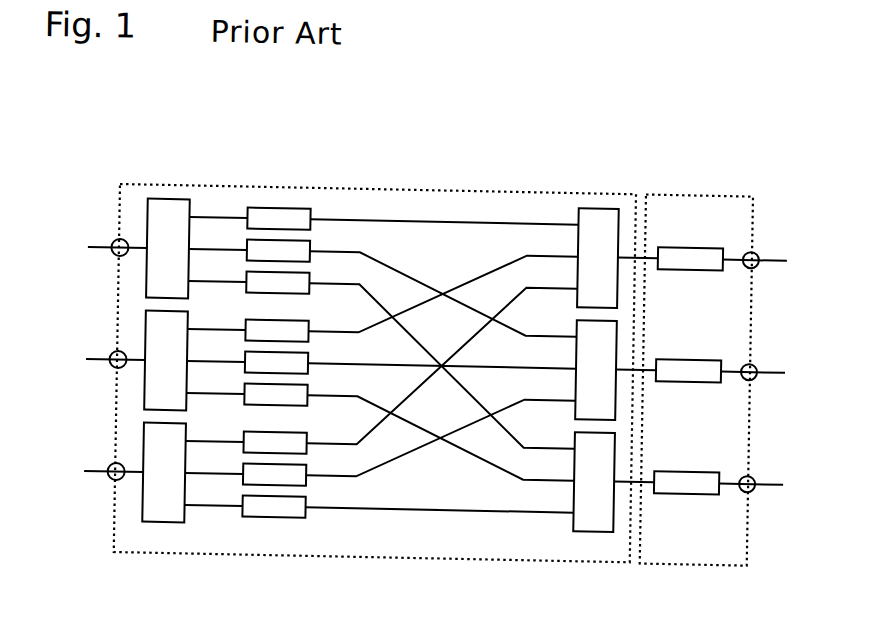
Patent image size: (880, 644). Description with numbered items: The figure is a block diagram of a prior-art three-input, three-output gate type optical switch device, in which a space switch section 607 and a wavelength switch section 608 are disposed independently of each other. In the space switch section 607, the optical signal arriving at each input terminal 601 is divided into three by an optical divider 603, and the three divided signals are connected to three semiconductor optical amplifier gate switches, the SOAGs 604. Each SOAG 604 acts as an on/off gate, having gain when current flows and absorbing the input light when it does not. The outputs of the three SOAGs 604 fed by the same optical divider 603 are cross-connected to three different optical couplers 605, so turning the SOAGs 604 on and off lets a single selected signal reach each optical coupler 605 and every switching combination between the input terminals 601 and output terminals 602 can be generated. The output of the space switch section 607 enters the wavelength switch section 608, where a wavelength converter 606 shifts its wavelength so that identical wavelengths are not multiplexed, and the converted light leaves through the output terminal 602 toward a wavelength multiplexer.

The input terminal 601 is at (113, 244).
The output terminal 602 is at (754, 240).
The optical divider 603 is at (165, 198).
The semiconductor optical amplifier gate switch (SOAG) 604 is at (266, 205).
The optical coupler 605 is at (600, 199).
The wavelength converter 606 is at (698, 483).
The space switch section 607 is at (381, 553).
The wavelength switch section 608 is at (678, 560).